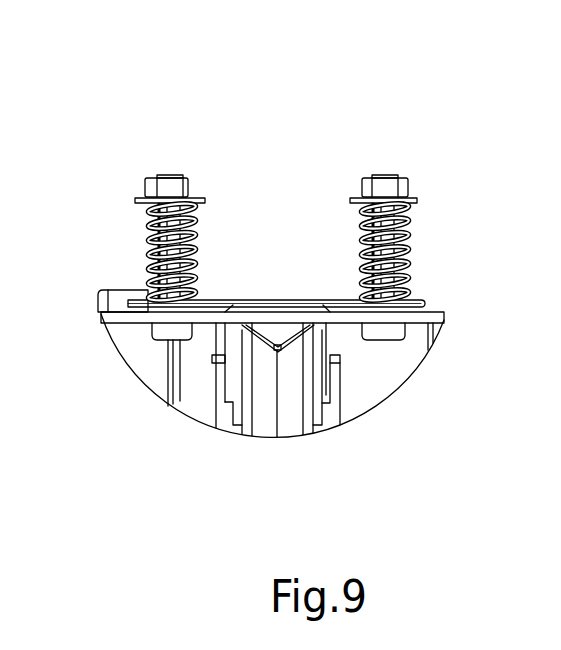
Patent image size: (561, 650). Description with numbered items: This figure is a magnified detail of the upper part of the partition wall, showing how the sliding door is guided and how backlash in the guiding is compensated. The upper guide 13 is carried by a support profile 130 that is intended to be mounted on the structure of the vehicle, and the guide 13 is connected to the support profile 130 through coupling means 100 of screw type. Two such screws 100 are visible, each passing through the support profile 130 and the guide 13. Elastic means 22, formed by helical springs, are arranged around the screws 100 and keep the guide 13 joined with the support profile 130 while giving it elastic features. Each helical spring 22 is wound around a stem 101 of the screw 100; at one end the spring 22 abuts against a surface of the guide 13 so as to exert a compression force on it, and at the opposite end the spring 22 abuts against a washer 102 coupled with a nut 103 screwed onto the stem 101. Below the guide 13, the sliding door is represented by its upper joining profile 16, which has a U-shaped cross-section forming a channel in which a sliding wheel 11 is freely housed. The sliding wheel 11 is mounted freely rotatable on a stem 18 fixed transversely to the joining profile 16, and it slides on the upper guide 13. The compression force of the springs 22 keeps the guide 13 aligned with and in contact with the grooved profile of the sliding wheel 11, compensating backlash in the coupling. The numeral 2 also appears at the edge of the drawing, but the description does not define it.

The coupling means 100 is at (288, 165).
The stem of the screw 101 is at (178, 278).
The washer 102 is at (205, 202).
The nut 103 is at (185, 190).
The elastic means 22 is at (153, 235).
The support profile 130 is at (448, 309).
The upper guide 13 is at (338, 302).
The upper joining profile 16 is at (333, 395).
The sliding wheel 11 is at (307, 423).
The stem 18 is at (208, 412).
The device 2 is at (560, 372).